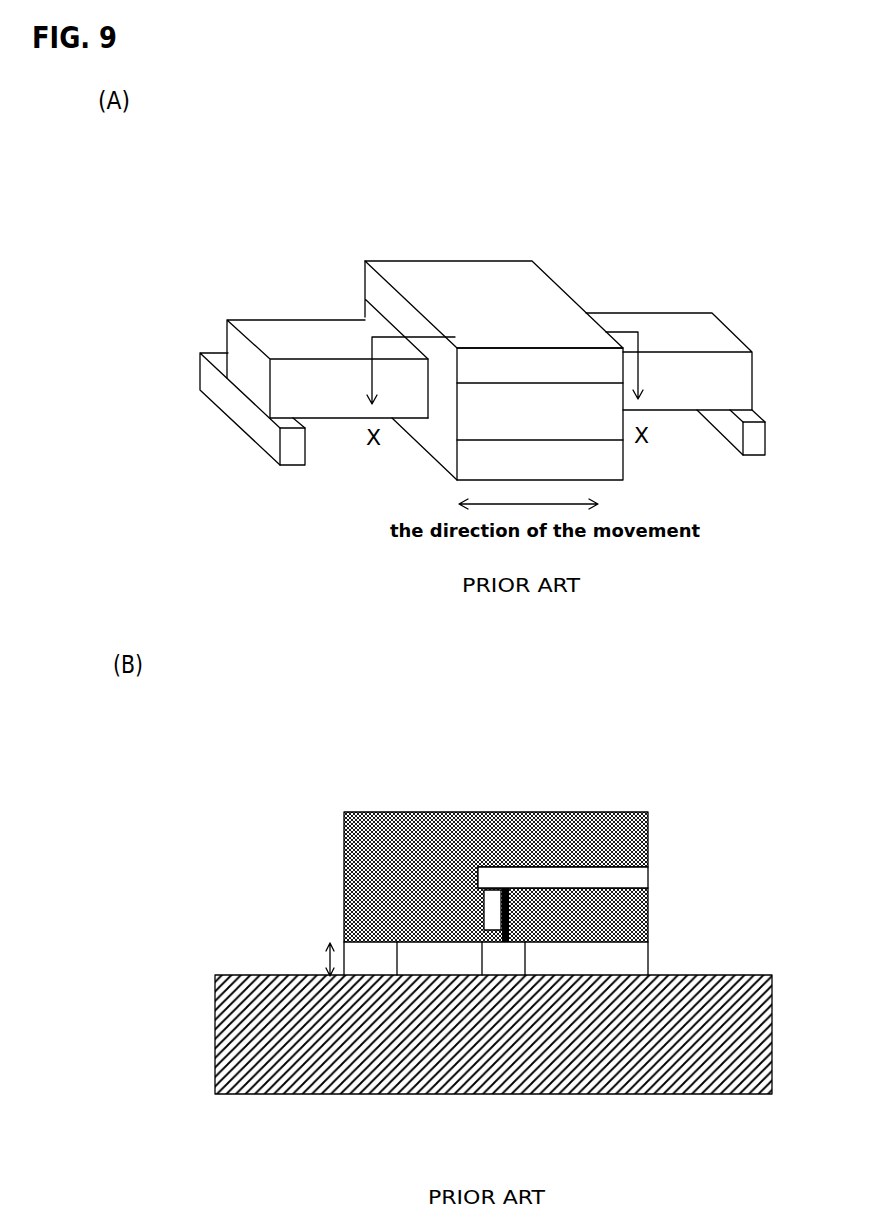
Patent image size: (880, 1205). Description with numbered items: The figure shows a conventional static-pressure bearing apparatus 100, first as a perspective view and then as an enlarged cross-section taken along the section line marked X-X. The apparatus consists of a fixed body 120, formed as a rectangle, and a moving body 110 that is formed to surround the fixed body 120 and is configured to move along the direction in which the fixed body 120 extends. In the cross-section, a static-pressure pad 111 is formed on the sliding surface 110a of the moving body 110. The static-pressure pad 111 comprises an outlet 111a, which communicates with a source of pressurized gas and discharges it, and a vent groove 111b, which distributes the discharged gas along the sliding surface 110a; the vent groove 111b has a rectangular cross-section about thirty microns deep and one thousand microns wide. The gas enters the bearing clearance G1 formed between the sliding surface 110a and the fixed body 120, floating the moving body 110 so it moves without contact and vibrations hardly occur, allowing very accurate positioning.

The static-pressure bearing apparatus 100 is at (734, 194).
The moving body 110 is at (487, 293).
The sliding surface 110a is at (650, 950).
The static-pressure pad 111 is at (525, 943).
The outlet 111a is at (482, 943).
The vent groove 111b is at (397, 943).
The fixed body 120 is at (303, 337).
The bearing clearance G1 is at (313, 959).